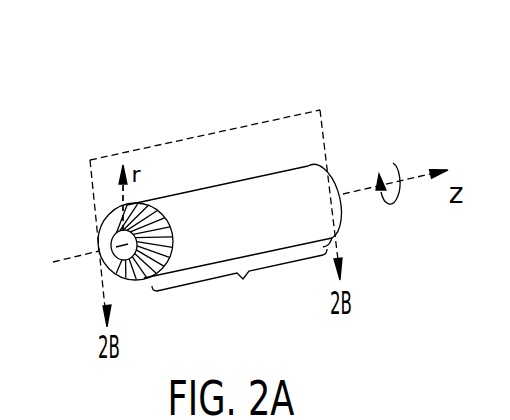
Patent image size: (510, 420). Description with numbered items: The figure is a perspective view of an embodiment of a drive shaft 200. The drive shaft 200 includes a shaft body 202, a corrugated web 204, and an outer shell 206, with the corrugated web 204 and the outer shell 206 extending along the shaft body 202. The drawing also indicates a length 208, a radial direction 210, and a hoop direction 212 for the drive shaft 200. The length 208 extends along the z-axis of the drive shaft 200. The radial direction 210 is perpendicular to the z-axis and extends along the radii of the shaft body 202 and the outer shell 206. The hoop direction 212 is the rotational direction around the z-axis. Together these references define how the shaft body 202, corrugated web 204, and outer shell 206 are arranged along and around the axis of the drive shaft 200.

The drive shaft 200 is at (235, 101).
The shaft body 202 is at (112, 270).
The corrugated web 204 is at (148, 203).
The outer shell 206 is at (285, 249).
The length 208 is at (239, 288).
The radial direction 210 is at (120, 190).
The hoop direction 212 is at (397, 165).